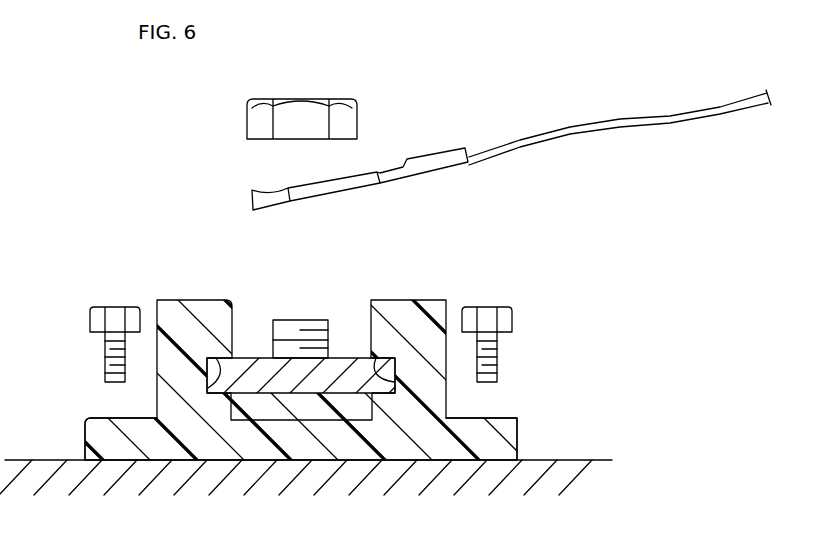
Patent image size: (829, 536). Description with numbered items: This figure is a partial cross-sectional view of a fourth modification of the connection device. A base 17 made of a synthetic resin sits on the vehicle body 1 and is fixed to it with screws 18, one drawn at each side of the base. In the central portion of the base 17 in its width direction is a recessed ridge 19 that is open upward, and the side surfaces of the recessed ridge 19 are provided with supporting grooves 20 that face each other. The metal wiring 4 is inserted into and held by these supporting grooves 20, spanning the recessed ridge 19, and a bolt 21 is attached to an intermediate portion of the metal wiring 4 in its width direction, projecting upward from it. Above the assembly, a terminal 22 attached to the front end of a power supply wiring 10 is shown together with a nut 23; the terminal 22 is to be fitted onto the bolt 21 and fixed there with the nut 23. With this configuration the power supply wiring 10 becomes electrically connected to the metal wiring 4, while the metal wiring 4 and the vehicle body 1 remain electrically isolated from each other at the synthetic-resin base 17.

The vehicle body 1 is at (560, 460).
The metal wiring 4 is at (249, 358).
The power supply wiring 10 is at (578, 123).
The base 17 is at (503, 418).
The screws 18 is at (90, 320).
The recessed ridge 19 is at (364, 312).
The supporting grooves 20 is at (220, 377).
The bolt 21 is at (302, 318).
The terminal 22 is at (358, 172).
The nut 23 is at (345, 100).